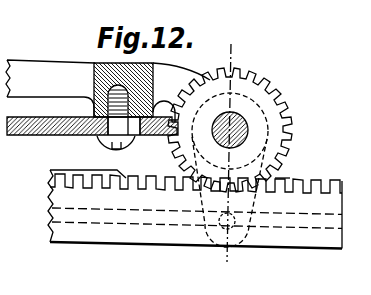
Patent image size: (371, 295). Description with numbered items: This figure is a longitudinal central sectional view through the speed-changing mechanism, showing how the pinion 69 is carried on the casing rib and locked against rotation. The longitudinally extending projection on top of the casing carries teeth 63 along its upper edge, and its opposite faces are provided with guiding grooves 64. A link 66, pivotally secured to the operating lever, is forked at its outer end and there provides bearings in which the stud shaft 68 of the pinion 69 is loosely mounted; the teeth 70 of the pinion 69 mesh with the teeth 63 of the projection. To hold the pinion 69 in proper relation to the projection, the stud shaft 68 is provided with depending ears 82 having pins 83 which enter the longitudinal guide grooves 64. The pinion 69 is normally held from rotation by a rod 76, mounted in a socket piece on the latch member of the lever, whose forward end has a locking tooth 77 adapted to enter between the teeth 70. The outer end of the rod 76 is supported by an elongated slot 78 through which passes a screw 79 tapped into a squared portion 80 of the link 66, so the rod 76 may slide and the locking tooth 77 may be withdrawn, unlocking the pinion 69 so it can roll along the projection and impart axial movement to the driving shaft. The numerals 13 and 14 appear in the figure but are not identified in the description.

The pivot axis center line 13 is at (228, 155).
The frame 14 is at (17, 241).
The teeth 63 is at (121, 175).
The guiding grooves 64 is at (163, 224).
The link 66 is at (32, 60).
The stud shaft 68 is at (246, 123).
The pinion 69 is at (272, 122).
The teeth 70 is at (255, 78).
The rod 76 is at (28, 136).
The locking tooth 77 is at (172, 122).
The elongated slot 78 is at (134, 136).
The screw 79 is at (104, 141).
The squared portion 80 is at (95, 63).
The depending ears 82 is at (280, 176).
The pins 83 is at (232, 229).